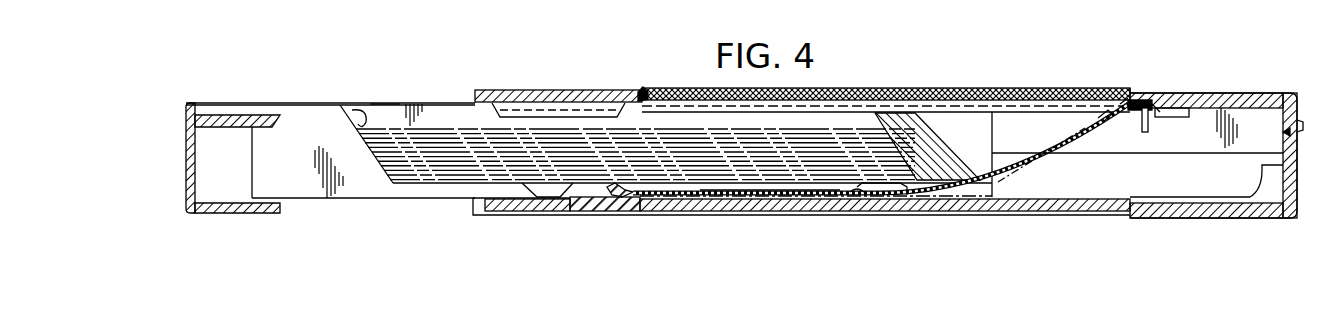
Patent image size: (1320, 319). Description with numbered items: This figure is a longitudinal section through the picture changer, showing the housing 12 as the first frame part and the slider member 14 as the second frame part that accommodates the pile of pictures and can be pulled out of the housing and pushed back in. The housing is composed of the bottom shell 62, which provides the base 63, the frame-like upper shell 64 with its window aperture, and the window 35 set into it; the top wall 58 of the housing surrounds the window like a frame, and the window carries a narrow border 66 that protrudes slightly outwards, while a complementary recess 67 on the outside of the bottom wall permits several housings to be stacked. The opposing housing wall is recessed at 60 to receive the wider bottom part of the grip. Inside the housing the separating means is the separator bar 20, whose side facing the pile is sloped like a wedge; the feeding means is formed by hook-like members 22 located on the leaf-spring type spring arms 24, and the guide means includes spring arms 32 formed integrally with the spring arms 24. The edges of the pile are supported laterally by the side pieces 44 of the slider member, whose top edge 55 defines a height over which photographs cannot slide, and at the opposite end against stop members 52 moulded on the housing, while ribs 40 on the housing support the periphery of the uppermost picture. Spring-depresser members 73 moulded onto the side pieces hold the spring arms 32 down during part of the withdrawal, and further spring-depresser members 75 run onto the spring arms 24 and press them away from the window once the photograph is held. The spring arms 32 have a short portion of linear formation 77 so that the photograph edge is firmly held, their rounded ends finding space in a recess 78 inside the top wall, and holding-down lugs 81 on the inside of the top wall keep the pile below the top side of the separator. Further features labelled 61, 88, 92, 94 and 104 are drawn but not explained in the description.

The housing 12 is at (1218, 92).
The slider member 14 is at (345, 201).
The separator bar 20 is at (946, 130).
The hook-like members 22 is at (598, 212).
The spring arms 24 is at (716, 212).
The spring arms 32 is at (1048, 172).
The window 35 is at (912, 97).
The ribs 40 is at (1178, 118).
The side pieces 44 is at (437, 116).
The stop members 52 is at (1142, 133).
The top edge 55 is at (385, 104).
The top wall 58 is at (1172, 97).
The recess 60 is at (518, 212).
The left end cap 61 is at (188, 174).
The bottom shell 62 is at (1236, 212).
The base 63 is at (990, 212).
The upper shell 64 is at (1252, 100).
The border 66 is at (641, 88).
The recess 67 is at (826, 212).
The spring-depresser members 73 is at (888, 197).
The spring-depresser members 75 is at (770, 196).
The linear portion 77 is at (1107, 118).
The recess 78 is at (1143, 99).
The holding-down lugs 81 is at (556, 100).
The opening 88 is at (1298, 127).
The chamfer notch 92 is at (360, 112).
The partition wall 94 is at (1157, 207).
The step 104 is at (1253, 178).